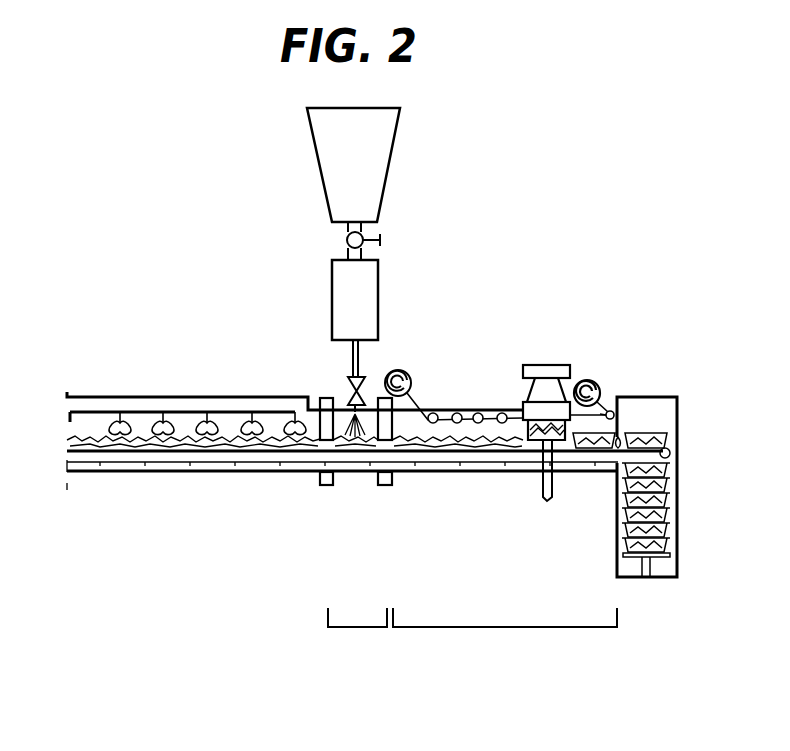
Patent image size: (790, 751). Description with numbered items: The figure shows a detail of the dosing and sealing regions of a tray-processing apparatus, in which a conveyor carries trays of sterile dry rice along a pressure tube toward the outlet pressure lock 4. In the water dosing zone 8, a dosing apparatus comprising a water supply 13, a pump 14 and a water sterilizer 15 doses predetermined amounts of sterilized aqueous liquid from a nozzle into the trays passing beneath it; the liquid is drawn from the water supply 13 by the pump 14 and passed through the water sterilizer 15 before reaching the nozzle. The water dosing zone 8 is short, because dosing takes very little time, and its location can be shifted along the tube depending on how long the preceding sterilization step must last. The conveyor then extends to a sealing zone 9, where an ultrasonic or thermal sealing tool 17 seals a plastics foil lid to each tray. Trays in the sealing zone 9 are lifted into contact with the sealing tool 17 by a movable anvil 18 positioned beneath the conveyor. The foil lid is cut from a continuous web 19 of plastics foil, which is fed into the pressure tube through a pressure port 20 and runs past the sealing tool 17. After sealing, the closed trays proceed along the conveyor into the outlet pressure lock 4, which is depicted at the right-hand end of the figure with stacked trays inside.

The water supply 13 is at (316, 158).
The pump 14 is at (345, 237).
The water sterilizer 15 is at (332, 306).
The ultrasonic or thermal sealing tool 17 is at (546, 364).
The movable anvil 18 is at (547, 501).
The continuous web 19 is at (477, 407).
The pressure port 20 is at (428, 403).
The outlet pressure lock 4 is at (647, 397).
The water dosing zone 8 is at (360, 629).
The sealing zone 9 is at (505, 629).